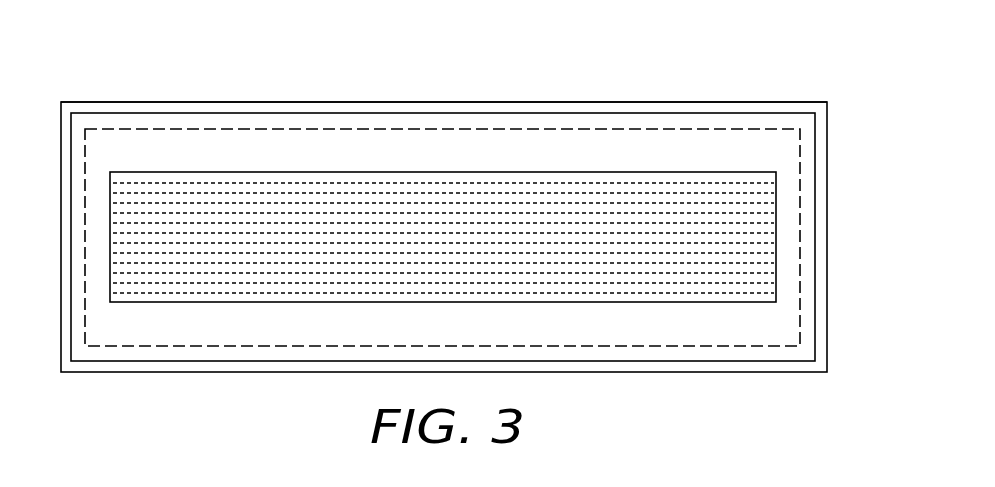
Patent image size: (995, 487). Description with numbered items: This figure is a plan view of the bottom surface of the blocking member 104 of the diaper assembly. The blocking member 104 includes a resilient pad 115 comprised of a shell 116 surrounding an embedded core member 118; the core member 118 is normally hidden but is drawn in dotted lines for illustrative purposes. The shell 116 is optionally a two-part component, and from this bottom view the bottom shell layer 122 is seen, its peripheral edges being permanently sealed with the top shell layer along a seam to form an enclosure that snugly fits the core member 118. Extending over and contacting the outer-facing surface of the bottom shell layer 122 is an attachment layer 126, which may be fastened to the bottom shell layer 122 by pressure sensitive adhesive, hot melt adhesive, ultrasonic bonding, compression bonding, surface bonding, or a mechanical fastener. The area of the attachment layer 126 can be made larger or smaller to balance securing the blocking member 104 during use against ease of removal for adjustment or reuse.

The blocking member 104 is at (754, 64).
The resilient pad 115 is at (236, 91).
The shell 116 is at (797, 100).
The core member 118 is at (800, 190).
The bottom shell layer 122 is at (704, 101).
The attachment layer 126 is at (758, 256).